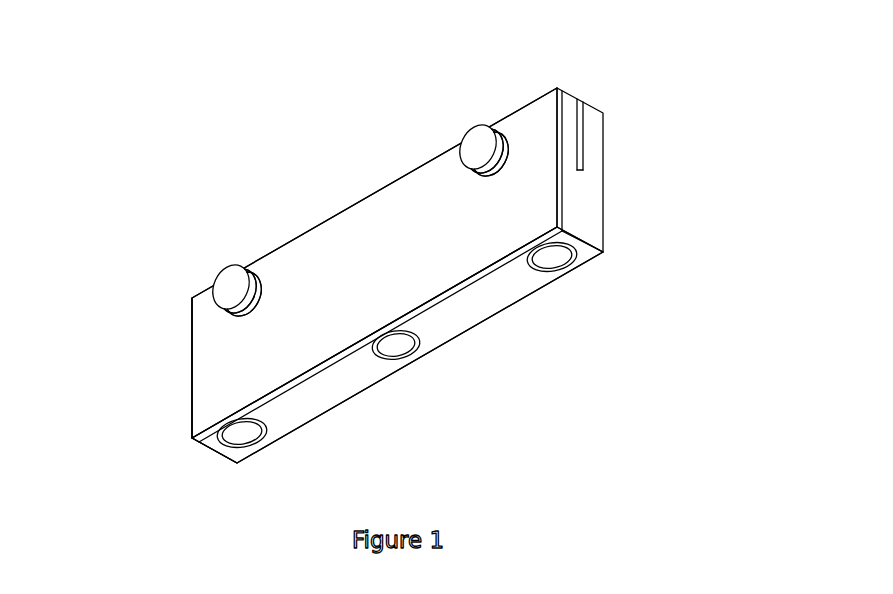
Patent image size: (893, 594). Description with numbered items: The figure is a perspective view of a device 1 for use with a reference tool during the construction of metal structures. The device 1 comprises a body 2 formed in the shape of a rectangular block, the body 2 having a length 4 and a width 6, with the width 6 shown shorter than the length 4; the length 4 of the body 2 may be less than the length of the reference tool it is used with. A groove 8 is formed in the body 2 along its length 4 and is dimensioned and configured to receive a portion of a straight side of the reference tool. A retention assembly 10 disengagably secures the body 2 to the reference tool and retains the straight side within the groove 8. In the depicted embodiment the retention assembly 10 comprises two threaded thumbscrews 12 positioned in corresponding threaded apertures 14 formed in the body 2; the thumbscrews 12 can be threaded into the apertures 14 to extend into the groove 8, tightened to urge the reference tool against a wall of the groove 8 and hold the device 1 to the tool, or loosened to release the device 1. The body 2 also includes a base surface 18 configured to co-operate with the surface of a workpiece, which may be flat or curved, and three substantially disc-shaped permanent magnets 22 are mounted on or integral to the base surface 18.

The device 1 is at (410, 53).
The body 2 is at (397, 275).
The length 4 is at (285, 245).
The width 6 is at (192, 390).
The groove 8 is at (584, 115).
The retention assembly 10 is at (475, 148).
The threaded thumbscrew 12 is at (477, 155).
The threaded aperture 14 is at (503, 158).
The base surface 18 is at (475, 302).
The permanent magnet 22 is at (552, 257).